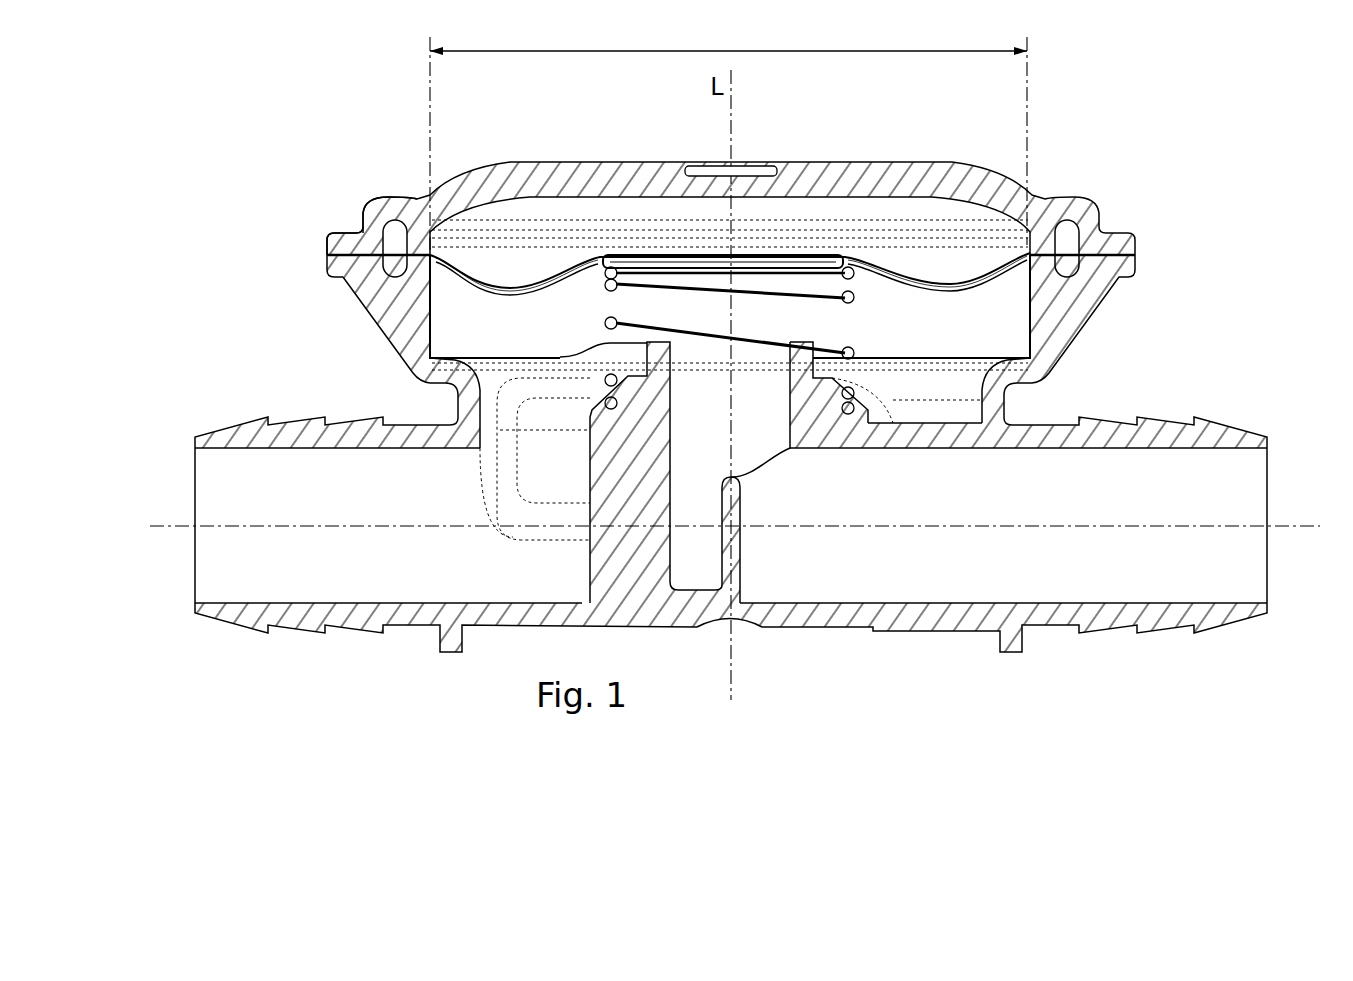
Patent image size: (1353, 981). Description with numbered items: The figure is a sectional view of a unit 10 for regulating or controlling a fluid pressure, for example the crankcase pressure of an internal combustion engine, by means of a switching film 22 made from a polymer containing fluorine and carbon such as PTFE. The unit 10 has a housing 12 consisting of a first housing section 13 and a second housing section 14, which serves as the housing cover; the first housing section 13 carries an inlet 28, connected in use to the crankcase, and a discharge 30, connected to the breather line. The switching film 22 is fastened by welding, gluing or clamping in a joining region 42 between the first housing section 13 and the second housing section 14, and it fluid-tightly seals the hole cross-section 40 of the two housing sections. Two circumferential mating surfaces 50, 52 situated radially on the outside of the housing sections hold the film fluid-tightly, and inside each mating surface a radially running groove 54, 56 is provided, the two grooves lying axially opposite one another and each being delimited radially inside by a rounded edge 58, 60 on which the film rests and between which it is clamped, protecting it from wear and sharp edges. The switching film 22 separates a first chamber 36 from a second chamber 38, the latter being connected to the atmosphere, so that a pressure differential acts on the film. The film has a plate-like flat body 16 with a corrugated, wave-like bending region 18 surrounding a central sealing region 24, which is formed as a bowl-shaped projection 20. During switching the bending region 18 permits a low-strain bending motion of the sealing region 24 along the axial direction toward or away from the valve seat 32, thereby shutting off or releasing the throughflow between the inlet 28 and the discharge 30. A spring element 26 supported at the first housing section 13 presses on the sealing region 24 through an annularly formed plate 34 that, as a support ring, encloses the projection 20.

The unit 10 is at (1146, 146).
The housing 12 is at (720, 365).
The first housing section 13 is at (1085, 312).
The second housing section 14 is at (921, 160).
The plate-like flat body 16 is at (547, 268).
The bending region 18 is at (447, 232).
The bowl-shaped projection 20 is at (655, 256).
The switching film 22 is at (590, 256).
The sealing region 24 is at (770, 255).
The spring element 26 is at (852, 297).
The inlet 28 is at (237, 432).
The discharge 30 is at (1205, 427).
The valve seat 32 is at (615, 352).
The plate 34 is at (858, 262).
The first chamber 36 is at (449, 351).
The second chamber 38 is at (489, 284).
The hole cross-section 40 is at (728, 136).
The joining region 42 is at (356, 240).
The mating surface 50 is at (338, 278).
The mating surface 52 is at (355, 232).
The groove 54 is at (372, 298).
The groove 56 is at (385, 197).
The edge 58 is at (425, 262).
The edge 60 is at (402, 222).